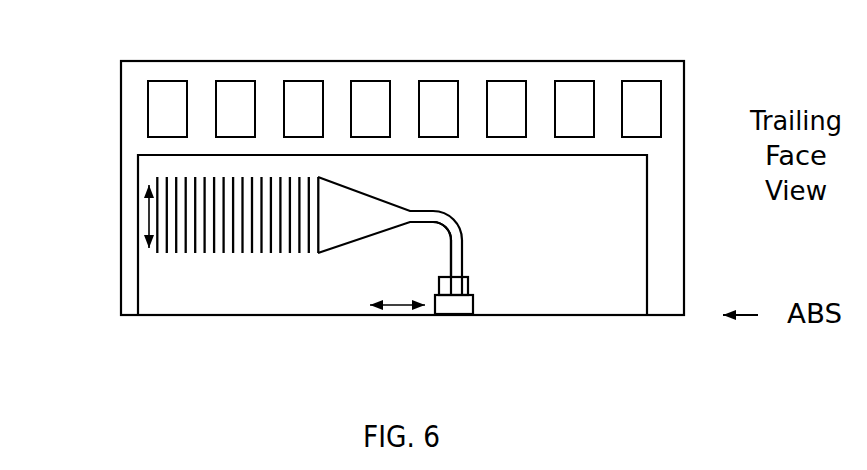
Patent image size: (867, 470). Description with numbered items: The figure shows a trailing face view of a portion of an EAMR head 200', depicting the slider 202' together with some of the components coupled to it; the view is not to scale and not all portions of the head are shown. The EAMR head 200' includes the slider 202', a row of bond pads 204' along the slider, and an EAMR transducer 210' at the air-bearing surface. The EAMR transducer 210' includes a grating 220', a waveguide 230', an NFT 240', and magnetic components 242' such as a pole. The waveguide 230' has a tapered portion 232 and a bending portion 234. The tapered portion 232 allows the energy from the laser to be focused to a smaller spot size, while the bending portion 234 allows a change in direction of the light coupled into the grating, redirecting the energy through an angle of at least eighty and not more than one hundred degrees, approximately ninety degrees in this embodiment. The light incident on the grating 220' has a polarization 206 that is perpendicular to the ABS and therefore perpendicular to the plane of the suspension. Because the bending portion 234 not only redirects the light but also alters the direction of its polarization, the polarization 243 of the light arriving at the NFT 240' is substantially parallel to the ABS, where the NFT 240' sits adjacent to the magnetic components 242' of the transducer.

The EAMR head 200' is at (397, 191).
The bond pads 204' is at (436, 173).
The slider 202' is at (442, 235).
The EAMR transducer 210' is at (415, 340).
The grating 220' is at (180, 251).
The polarization 206 is at (147, 210).
The tapered portion 232 is at (377, 187).
The waveguide 230' is at (329, 294).
The bending portion 234 is at (428, 232).
The polarization 243 is at (402, 307).
The magnetic components 242' is at (518, 326).
The NFT 240' is at (487, 326).